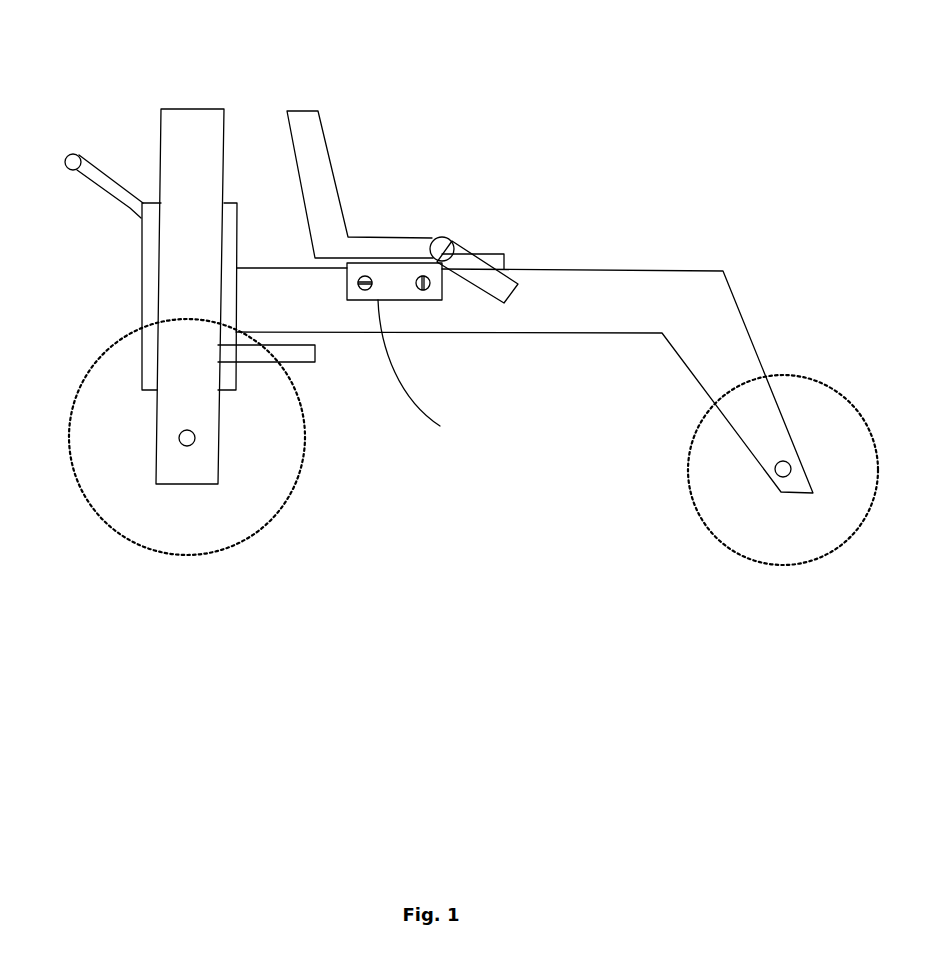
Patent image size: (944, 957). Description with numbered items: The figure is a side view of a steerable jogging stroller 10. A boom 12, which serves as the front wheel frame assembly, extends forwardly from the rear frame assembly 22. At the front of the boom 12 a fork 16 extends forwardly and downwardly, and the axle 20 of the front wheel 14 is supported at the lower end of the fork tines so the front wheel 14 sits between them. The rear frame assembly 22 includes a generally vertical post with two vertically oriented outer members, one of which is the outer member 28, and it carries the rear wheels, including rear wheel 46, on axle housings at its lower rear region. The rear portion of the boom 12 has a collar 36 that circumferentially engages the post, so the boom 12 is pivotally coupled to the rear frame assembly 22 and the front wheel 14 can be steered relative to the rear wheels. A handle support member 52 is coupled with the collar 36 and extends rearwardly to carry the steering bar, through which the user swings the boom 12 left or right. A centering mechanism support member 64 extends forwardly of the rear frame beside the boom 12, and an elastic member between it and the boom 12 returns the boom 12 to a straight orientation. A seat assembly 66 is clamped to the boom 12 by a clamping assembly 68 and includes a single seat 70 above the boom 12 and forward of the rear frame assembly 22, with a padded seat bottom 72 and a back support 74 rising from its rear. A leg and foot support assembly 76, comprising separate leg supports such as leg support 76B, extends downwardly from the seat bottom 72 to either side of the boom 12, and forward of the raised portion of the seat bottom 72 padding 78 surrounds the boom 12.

The steerable stroller 10 is at (447, 110).
The boom 12 is at (550, 333).
The front wheel 14 is at (692, 490).
The fork 16 is at (635, 355).
The axle 20 is at (794, 457).
The rear frame assembly 22 is at (128, 156).
The outer member 28 is at (156, 407).
The collar 36 is at (238, 203).
The rear wheel 46 is at (183, 555).
The handle support member 52 is at (130, 210).
The centering mechanism support member 64 is at (315, 362).
The clamping assembly 68 is at (425, 335).
The seat 70 is at (335, 176).
The seat bottom 72 is at (428, 237).
The back support 74 is at (324, 128).
The leg and foot support assembly 76 is at (381, 170).
The leg support 76B is at (507, 270).
The padding 78 is at (481, 252).
The seat assembly 66 is at (413, 200).